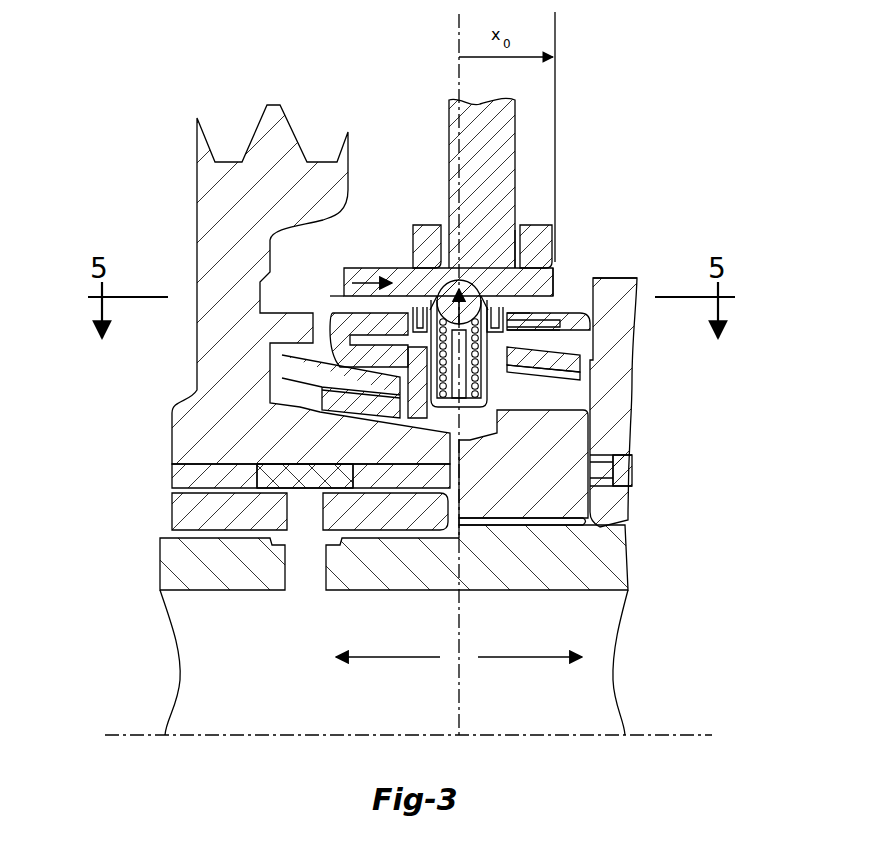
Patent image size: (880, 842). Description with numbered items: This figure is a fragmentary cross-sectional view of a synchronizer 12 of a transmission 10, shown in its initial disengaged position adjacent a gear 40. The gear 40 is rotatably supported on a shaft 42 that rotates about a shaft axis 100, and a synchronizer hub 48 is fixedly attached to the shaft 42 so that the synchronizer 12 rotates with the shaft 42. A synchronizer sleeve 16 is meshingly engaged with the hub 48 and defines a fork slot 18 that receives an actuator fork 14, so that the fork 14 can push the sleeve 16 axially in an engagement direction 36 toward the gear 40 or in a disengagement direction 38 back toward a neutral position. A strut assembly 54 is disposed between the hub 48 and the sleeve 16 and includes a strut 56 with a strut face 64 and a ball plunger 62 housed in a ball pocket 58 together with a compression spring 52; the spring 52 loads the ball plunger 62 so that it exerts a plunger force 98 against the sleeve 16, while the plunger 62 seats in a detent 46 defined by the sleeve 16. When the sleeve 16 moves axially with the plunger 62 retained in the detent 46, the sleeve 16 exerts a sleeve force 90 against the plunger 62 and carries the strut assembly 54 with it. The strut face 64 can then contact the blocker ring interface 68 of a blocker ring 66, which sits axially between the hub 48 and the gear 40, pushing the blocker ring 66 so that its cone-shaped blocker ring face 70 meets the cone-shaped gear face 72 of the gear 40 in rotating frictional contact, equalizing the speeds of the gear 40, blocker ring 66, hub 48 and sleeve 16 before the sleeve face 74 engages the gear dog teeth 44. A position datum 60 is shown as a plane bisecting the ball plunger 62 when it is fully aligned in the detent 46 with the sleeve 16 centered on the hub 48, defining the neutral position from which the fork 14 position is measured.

The transmission 10 is at (676, 86).
The synchronizer 12 is at (580, 207).
The actuator fork 14 is at (448, 138).
The synchronizer sleeve 16 is at (356, 268).
The fork slot 18 is at (517, 245).
The engagement direction 36 is at (525, 660).
The disengagement direction 38 is at (402, 660).
The gear 40 is at (642, 392).
The shaft 42 is at (632, 617).
The gear dog teeth 44 is at (616, 270).
The detent 46 is at (468, 291).
The synchronizer hub 48 is at (622, 470).
The compression spring 52 is at (499, 411).
The strut assembly 54 is at (428, 290).
The strut 56 is at (343, 293).
The ball pocket 58 is at (443, 310).
The position datum 60 is at (455, 33).
The ball plunger 62 is at (478, 301).
The strut face 64 is at (528, 316).
The blocker ring 66 is at (350, 313).
The blocker ring interface 68 is at (512, 332).
The blocker ring face 70 is at (579, 356).
The gear face 72 is at (532, 358).
The sleeve face 74 is at (575, 272).
The sleeve force 90 is at (384, 287).
The plunger force 98 is at (472, 322).
The shaft axis 100 is at (710, 733).